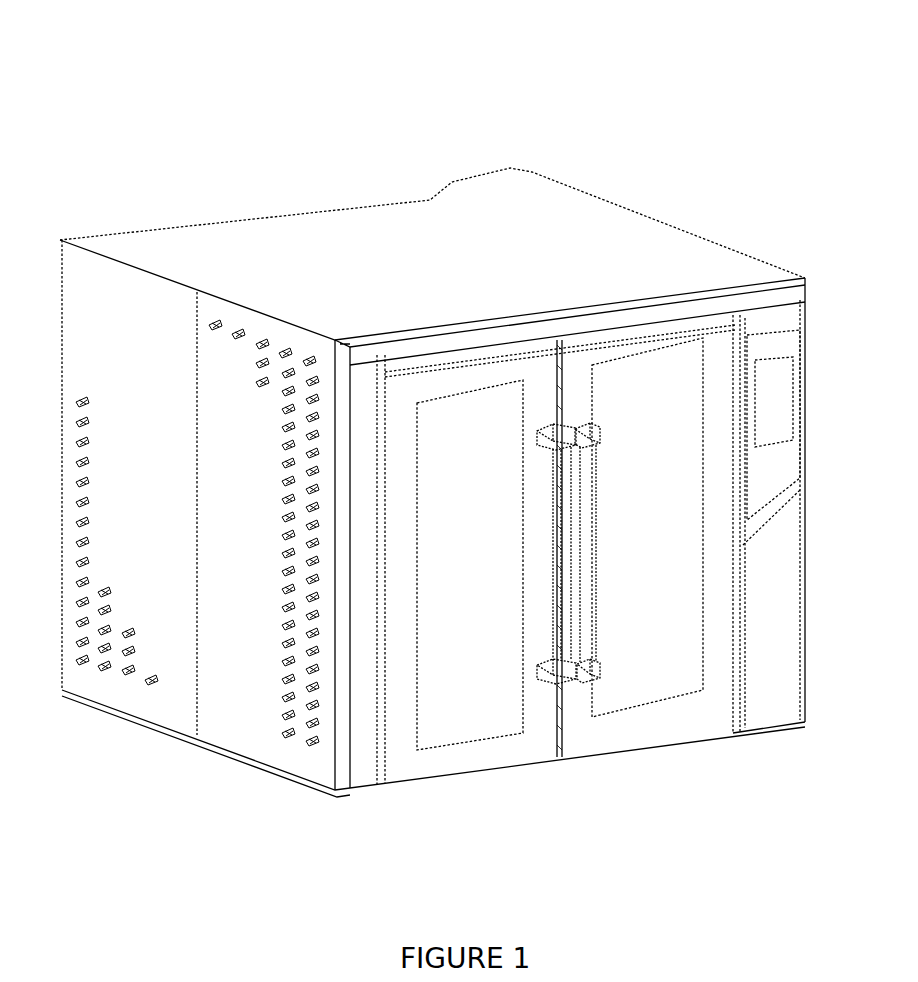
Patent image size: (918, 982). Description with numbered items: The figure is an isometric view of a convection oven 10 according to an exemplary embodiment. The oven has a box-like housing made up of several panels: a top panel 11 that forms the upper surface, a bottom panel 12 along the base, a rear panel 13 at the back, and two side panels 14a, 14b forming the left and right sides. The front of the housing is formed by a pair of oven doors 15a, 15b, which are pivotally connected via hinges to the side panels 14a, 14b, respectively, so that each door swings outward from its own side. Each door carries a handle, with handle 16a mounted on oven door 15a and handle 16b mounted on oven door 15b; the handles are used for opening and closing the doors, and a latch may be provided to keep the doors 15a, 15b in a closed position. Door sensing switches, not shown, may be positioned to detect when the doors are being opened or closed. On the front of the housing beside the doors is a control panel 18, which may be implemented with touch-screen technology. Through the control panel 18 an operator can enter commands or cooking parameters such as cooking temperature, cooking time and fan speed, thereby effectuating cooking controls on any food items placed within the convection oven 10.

The convection oven 10 is at (375, 157).
The top panel 11 is at (440, 267).
The bottom panel 12 is at (264, 767).
The rear panel 13 is at (229, 216).
The side panel 14a is at (195, 509).
The side panel 14b is at (703, 221).
The oven door 15a is at (497, 568).
The oven door 15b is at (673, 566).
The handle 16a is at (556, 608).
The handle 16b is at (584, 602).
The control panel 18 is at (790, 423).